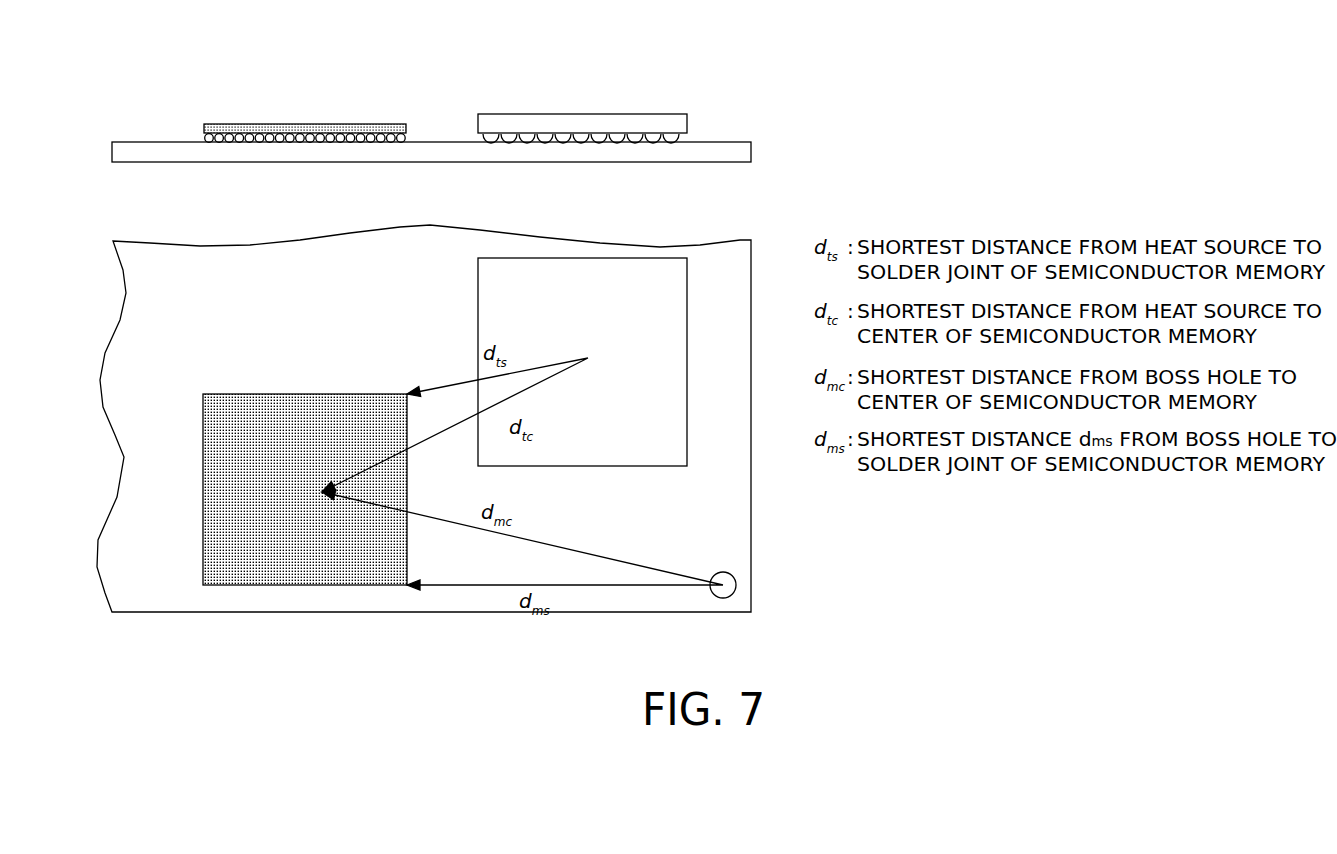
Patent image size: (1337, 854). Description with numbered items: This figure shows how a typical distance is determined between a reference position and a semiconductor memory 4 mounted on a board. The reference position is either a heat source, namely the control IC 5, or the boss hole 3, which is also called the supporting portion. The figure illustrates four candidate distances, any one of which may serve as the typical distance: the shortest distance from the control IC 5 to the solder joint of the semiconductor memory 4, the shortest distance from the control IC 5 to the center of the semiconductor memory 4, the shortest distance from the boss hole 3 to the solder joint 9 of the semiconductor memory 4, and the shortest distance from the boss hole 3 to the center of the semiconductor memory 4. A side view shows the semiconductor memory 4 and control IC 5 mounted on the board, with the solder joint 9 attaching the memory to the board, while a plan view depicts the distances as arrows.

The supporting portion (boss hole) 3 is at (732, 572).
The semiconductor memory 4 is at (312, 124).
The control IC 5 is at (618, 114).
The solder joint 9 is at (410, 141).